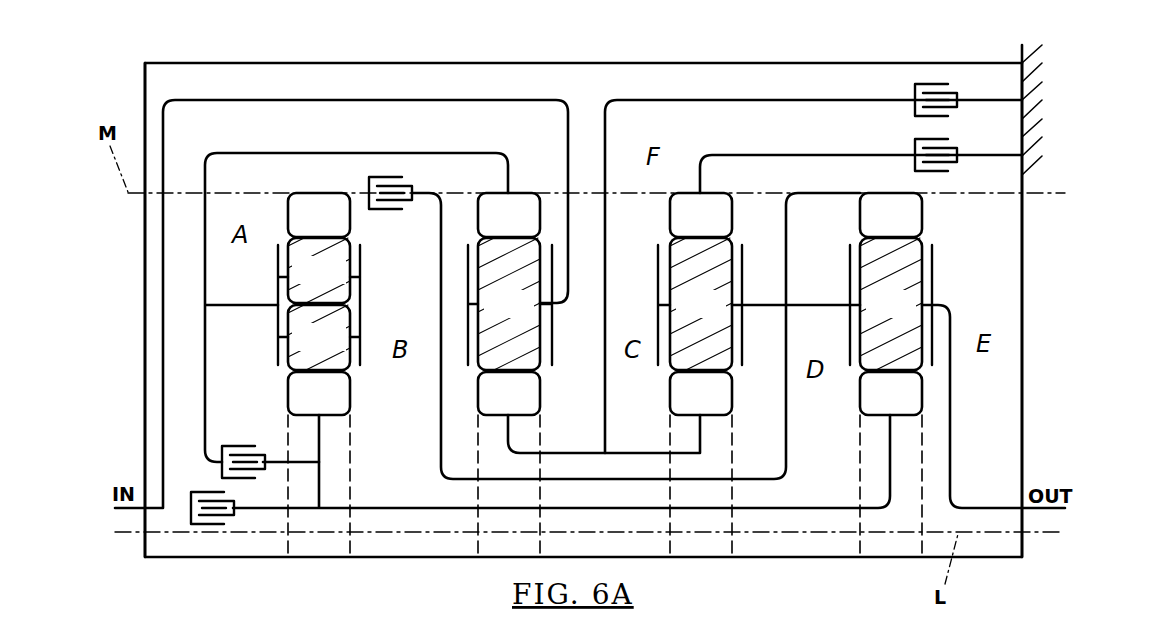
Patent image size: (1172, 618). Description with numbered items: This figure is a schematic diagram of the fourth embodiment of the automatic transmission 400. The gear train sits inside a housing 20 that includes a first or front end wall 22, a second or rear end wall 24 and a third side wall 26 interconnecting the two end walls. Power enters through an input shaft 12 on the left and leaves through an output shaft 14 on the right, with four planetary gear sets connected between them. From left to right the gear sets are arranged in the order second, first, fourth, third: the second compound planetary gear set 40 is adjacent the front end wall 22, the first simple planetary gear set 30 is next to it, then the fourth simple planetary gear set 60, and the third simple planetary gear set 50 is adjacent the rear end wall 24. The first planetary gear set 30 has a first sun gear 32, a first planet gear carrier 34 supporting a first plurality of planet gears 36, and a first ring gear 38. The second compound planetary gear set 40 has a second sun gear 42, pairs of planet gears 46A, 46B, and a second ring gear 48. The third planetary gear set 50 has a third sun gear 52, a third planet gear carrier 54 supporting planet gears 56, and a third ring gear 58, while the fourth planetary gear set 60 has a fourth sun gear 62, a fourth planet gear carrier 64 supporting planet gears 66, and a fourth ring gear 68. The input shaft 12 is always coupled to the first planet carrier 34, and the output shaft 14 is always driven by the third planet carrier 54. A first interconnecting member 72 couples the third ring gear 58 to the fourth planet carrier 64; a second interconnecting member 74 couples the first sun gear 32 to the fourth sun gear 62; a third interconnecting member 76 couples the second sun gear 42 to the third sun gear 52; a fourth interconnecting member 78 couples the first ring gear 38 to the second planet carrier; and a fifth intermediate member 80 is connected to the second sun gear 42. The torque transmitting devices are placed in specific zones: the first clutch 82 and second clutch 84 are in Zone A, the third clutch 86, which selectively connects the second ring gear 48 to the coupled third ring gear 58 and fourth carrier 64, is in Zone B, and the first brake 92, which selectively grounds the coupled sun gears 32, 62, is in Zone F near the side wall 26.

The input shaft 12 is at (215, 100).
The output shaft 14 is at (1048, 512).
The housing 20 is at (583, 287).
The first or front end wall 22 is at (143, 415).
The second or rear end wall 24 is at (1022, 381).
The third side wall 26 is at (430, 63).
The first simple planetary gear set 30 is at (490, 321).
The first sun gear 32 is at (509, 393).
The first planet gear carrier 34 is at (552, 346).
The first plurality of pinion or planet gears 36 is at (509, 304).
The first ring gear 38 is at (509, 215).
The second compound planetary gear set 40 is at (266, 311).
The second sun gear 42 is at (319, 393).
The pinion or planet gear of second pair 46A is at (319, 270).
The pinion or planet gear of second pair 46B is at (319, 337).
The second ring gear 48 is at (319, 215).
The third simple planetary gear set 50 is at (954, 304).
The third sun gear 52 is at (891, 393).
The third planet gear carrier 54 is at (935, 268).
The third plurality of pinion or planet gears 56 is at (891, 304).
The third ring gear 58 is at (891, 215).
The fourth simple planetary gear set 60 is at (719, 322).
The fourth sun gear 62 is at (701, 393).
The fourth planet gear carrier 64 is at (788, 264).
The fourth plurality of pinion or planet gears 66 is at (701, 304).
The fourth ring gear 68 is at (701, 215).
The first shaft, quill or interconnecting member 72 is at (786, 222).
The second shaft, quill or interconnecting member 74 is at (676, 456).
The third shaft, quill or interconnecting member 76 is at (455, 510).
The fourth shaft, quill or interconnecting member 78 is at (292, 153).
The fifth shaft, quill or intermediate member 80 is at (305, 510).
The first clutch 82 is at (208, 527).
The second clutch 84 is at (245, 446).
The third clutch 86 is at (393, 211).
The first brake 92 is at (925, 84).
The fourth embodiment of the automatic transmission 400 is at (1106, 96).